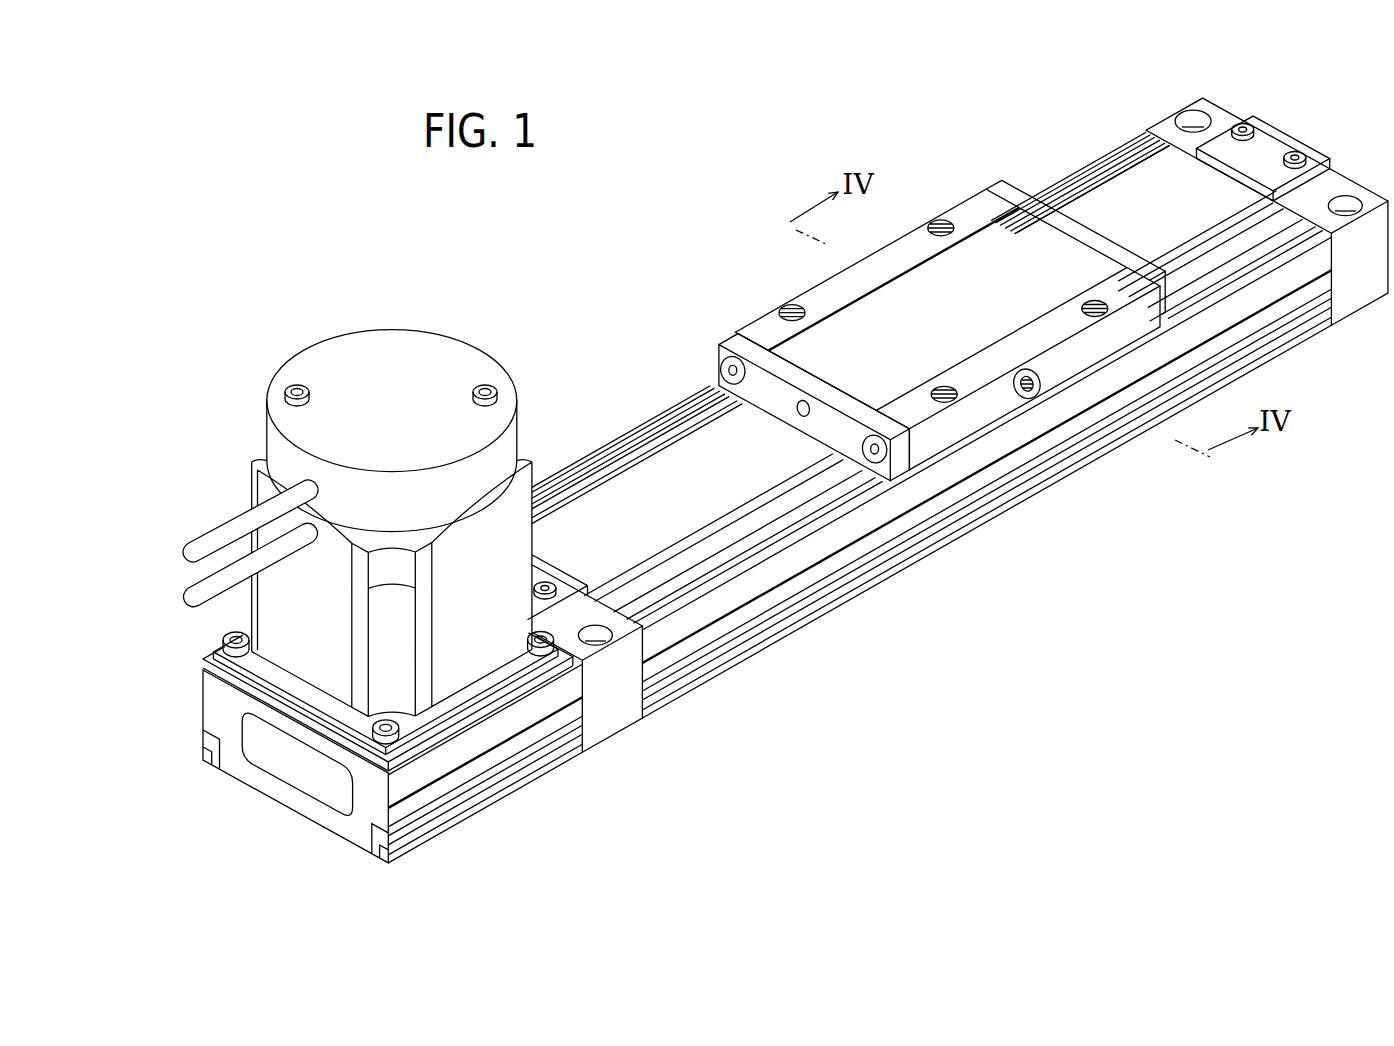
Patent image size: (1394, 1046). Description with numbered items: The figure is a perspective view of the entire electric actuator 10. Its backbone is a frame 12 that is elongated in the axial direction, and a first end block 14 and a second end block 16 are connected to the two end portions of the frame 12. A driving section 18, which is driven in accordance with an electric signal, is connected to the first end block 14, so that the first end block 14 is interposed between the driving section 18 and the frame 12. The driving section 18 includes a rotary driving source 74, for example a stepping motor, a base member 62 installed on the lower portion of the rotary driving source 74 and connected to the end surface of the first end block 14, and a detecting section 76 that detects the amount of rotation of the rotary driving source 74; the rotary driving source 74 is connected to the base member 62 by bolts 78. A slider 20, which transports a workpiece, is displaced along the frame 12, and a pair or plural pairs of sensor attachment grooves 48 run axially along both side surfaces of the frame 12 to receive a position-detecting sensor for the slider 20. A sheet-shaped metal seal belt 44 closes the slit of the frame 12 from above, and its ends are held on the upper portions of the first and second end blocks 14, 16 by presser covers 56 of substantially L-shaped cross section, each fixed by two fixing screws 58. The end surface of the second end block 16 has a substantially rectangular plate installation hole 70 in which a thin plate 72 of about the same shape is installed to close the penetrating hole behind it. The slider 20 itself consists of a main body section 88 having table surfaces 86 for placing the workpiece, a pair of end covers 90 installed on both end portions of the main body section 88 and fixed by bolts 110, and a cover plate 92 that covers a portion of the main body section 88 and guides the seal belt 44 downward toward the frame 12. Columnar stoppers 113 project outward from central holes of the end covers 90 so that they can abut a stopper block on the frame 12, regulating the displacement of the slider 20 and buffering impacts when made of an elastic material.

The electric actuator 10 is at (596, 249).
The frame 12 is at (775, 650).
The first end block 14 is at (605, 747).
The second end block 16 is at (1196, 95).
The driving section 18 is at (354, 519).
The slider 20 is at (893, 368).
The seal belt 44 is at (1137, 217).
The sensor attachment grooves 48 is at (1045, 445).
The presser cover 56 is at (1268, 128).
The fixing screws 58 is at (1297, 156).
The base member 62 is at (450, 776).
The plate installation hole 70 is at (245, 752).
The plate 72 is at (305, 782).
The rotary driving source 74 is at (293, 655).
The detecting section 76 is at (417, 342).
The bolts 78 is at (225, 641).
The table surfaces 86 is at (768, 330).
The main body section 88 is at (975, 425).
The end covers 90 is at (893, 322).
The cover plate 92 is at (975, 255).
The bolts 110 is at (722, 372).
The stoppers 113 is at (797, 414).